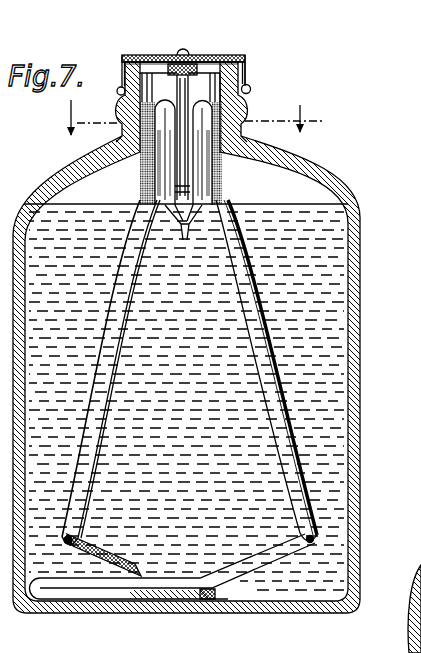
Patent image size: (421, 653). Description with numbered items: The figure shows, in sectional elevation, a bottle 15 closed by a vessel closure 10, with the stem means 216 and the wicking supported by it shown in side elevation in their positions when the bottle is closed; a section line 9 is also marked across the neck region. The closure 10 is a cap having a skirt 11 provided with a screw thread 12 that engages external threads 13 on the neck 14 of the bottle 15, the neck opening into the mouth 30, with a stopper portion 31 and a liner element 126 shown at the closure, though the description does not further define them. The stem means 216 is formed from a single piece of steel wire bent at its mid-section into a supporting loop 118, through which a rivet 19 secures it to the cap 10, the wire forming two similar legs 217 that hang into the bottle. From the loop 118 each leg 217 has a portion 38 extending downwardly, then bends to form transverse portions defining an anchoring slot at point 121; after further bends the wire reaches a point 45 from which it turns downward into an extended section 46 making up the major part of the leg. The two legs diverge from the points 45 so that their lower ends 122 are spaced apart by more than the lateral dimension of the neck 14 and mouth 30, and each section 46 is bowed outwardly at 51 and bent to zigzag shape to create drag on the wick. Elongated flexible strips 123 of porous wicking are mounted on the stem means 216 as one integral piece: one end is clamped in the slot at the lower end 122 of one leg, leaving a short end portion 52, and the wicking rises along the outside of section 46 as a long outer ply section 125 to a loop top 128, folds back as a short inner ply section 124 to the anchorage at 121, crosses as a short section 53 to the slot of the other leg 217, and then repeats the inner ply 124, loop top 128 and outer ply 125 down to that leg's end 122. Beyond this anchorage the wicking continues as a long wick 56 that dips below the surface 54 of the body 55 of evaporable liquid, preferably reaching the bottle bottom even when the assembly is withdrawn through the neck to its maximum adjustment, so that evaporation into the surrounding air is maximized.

The section line 9 is at (189, 118).
The vessel closure 10 is at (246, 57).
The skirt 11 is at (246, 82).
The screw thread 12 is at (120, 86).
The external threads 13 is at (244, 72).
The neck 14 is at (251, 91).
The bottle 15 is at (330, 169).
The rivet 19 is at (186, 50).
The mouth 30 is at (246, 52).
The stopper 31 is at (240, 124).
The downwardly extending portion 38 is at (262, 148).
The point of bend 45 is at (184, 218).
The extended section 46 is at (112, 412).
The outward bow 51 is at (130, 302).
The short end portion 52 is at (128, 556).
The short section 53 is at (200, 178).
The surface 54 is at (318, 198).
The body of evaporable liquid 55 is at (320, 453).
The wick 56 is at (236, 560).
The loop 118 is at (160, 55).
The anchorage point 121 is at (184, 173).
The lower end 122 is at (76, 530).
The elongated flexible strips 123 is at (103, 335).
The inner ply section 124 is at (114, 142).
The outer ply section 125 is at (98, 410).
The cap liner 126 is at (140, 55).
The loop top 128 is at (250, 96).
The stem means 216 is at (200, 70).
The legs 217 is at (180, 152).